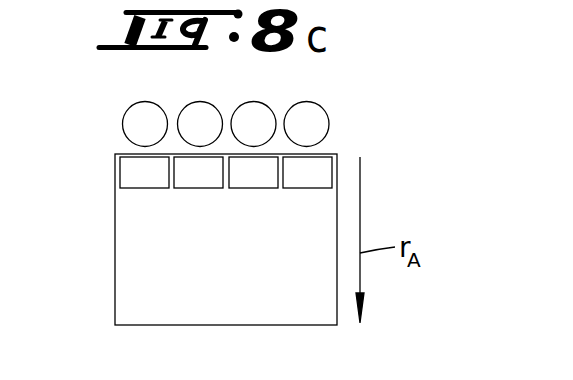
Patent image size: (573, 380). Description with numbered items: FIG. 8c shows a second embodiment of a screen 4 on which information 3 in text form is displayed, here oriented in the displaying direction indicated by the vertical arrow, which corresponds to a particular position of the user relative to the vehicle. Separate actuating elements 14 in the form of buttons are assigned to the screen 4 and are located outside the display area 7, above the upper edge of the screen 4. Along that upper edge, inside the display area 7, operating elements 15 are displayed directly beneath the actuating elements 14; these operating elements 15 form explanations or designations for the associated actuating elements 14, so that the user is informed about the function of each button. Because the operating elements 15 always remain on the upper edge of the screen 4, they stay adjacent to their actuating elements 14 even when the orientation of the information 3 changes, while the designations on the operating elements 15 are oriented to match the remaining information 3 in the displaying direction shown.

The information 3 is at (130, 248).
The screen 4 is at (115, 195).
The display area 7 is at (127, 239).
The actuating elements 14 is at (265, 107).
The operating elements 15 is at (140, 163).